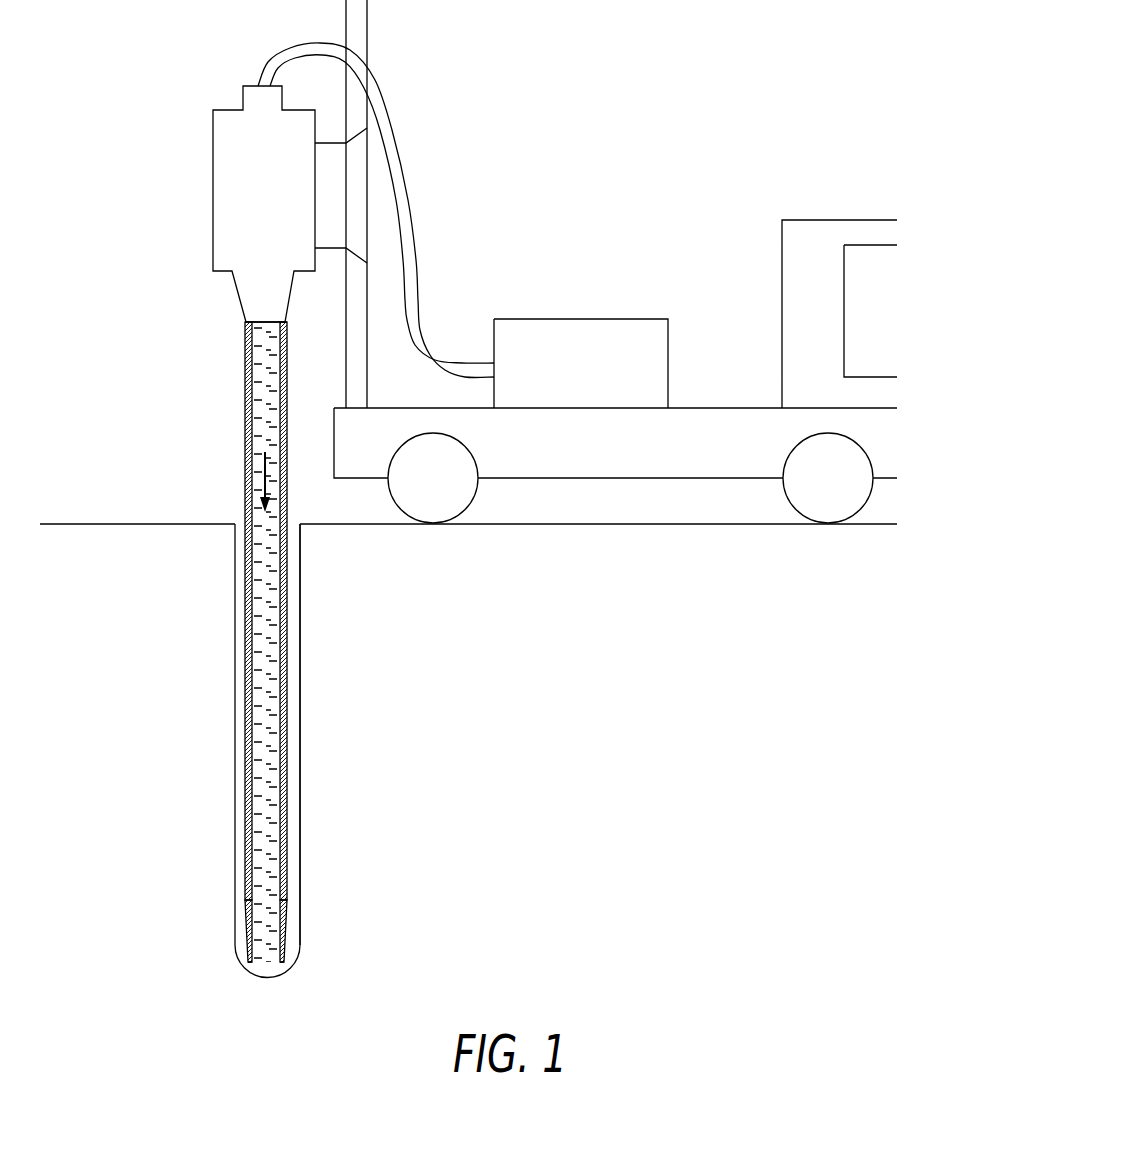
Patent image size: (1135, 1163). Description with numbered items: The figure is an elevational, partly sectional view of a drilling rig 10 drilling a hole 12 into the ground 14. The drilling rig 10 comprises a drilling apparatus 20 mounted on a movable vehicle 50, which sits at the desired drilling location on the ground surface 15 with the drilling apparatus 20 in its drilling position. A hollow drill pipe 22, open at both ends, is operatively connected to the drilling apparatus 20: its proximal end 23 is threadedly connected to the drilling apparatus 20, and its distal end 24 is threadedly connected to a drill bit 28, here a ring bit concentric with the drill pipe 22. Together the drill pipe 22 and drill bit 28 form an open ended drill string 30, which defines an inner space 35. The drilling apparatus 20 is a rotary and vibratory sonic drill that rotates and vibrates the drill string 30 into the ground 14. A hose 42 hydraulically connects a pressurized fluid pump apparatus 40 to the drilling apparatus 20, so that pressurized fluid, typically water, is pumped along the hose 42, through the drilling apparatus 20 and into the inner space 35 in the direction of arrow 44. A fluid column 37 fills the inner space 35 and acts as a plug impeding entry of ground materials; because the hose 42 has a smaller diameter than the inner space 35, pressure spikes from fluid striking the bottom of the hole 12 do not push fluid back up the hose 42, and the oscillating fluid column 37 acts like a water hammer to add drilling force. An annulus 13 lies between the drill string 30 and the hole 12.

The drilling rig 10 is at (580, 147).
The hole 12 is at (228, 738).
The annulus 13 is at (295, 793).
The ground 14 is at (158, 587).
The ground surface 15 is at (80, 525).
The drilling apparatus 20 is at (233, 197).
The drill pipe 22 is at (246, 380).
The proximal end 23 is at (246, 323).
The distal end 24 is at (289, 878).
The drill bit 28 is at (288, 943).
The drill string 30 is at (300, 649).
The inner space 35 is at (288, 716).
The fluid column 37 is at (273, 750).
The pump apparatus 40 is at (565, 348).
The hose 42 is at (418, 233).
The arrow 44 is at (246, 470).
The movable vehicle 50 is at (812, 210).